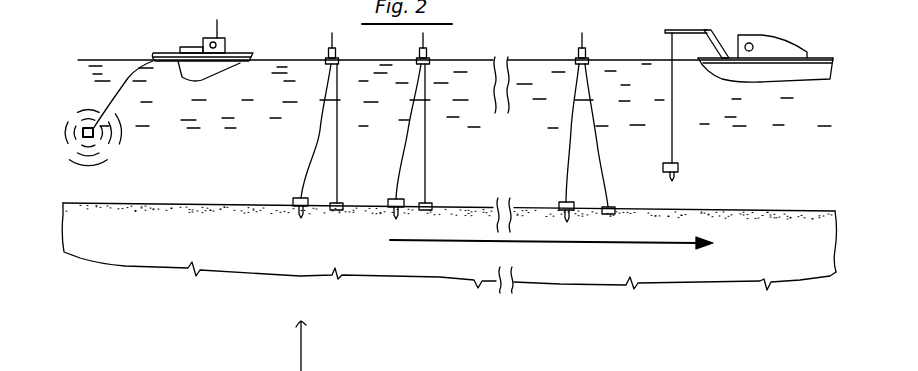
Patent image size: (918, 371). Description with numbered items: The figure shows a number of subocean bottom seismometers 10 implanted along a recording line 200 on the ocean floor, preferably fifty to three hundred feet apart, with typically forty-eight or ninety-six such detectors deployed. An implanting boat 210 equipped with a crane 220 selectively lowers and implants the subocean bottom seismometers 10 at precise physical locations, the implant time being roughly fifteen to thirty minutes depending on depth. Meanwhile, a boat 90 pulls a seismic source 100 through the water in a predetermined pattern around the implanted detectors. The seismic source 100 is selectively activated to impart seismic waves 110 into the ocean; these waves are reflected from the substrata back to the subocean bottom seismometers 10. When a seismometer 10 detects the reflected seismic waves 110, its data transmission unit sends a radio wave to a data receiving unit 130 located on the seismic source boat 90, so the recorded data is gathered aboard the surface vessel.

The subocean bottom seismometer 10 is at (294, 199).
The boat 90 is at (225, 43).
The seismic source 100 is at (83, 128).
The seismic waves 110 is at (116, 155).
The data receiving unit 130 is at (217, 29).
The recording line 200 is at (600, 243).
The implanting boat 210 is at (778, 36).
The crane 220 is at (672, 29).